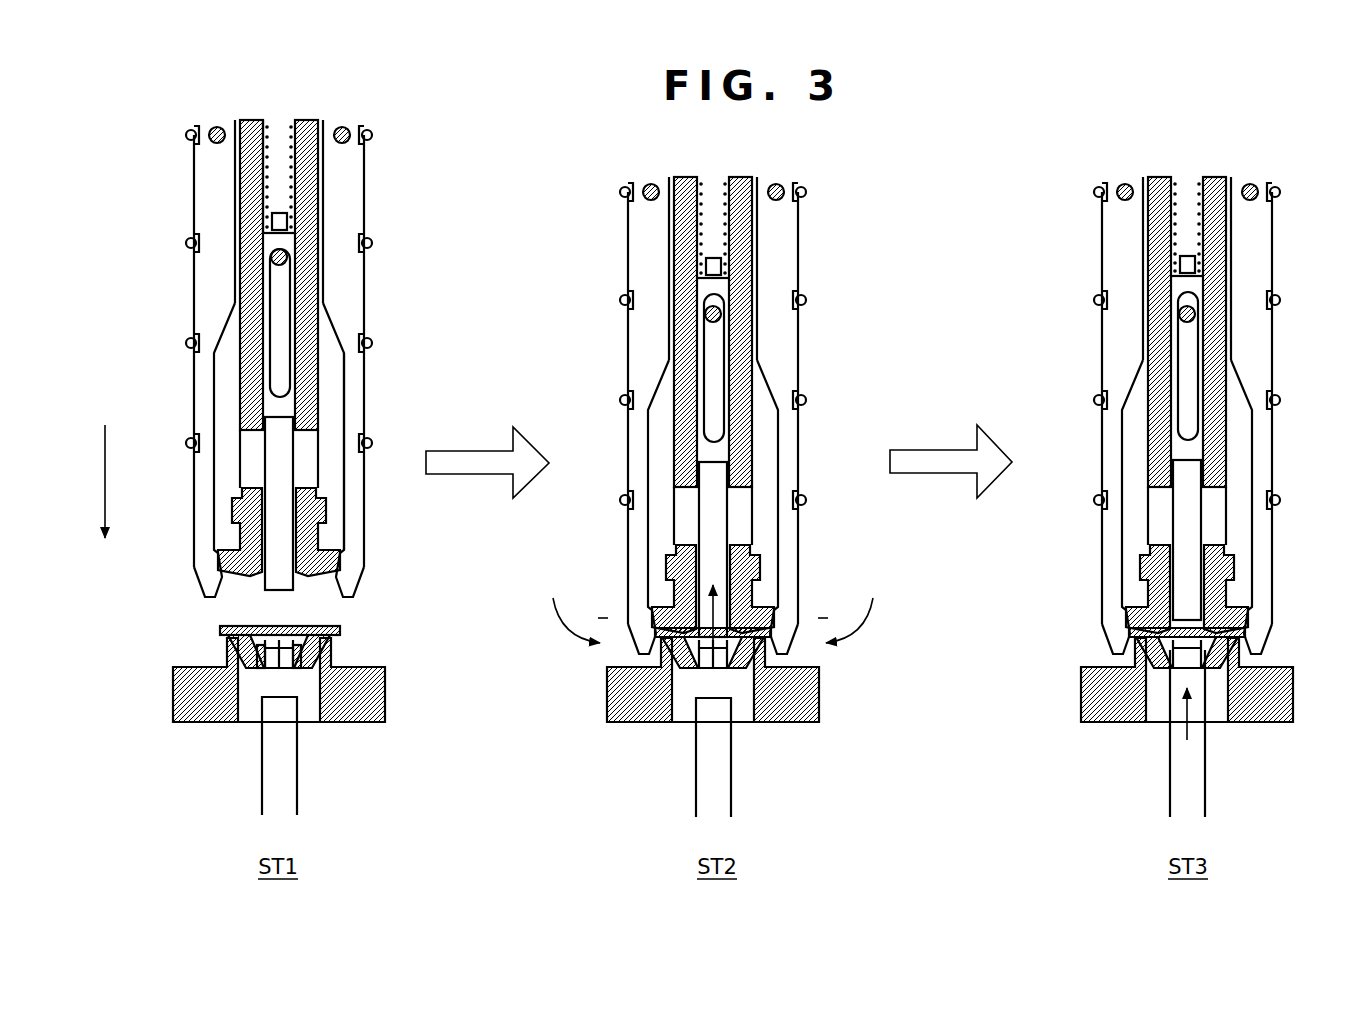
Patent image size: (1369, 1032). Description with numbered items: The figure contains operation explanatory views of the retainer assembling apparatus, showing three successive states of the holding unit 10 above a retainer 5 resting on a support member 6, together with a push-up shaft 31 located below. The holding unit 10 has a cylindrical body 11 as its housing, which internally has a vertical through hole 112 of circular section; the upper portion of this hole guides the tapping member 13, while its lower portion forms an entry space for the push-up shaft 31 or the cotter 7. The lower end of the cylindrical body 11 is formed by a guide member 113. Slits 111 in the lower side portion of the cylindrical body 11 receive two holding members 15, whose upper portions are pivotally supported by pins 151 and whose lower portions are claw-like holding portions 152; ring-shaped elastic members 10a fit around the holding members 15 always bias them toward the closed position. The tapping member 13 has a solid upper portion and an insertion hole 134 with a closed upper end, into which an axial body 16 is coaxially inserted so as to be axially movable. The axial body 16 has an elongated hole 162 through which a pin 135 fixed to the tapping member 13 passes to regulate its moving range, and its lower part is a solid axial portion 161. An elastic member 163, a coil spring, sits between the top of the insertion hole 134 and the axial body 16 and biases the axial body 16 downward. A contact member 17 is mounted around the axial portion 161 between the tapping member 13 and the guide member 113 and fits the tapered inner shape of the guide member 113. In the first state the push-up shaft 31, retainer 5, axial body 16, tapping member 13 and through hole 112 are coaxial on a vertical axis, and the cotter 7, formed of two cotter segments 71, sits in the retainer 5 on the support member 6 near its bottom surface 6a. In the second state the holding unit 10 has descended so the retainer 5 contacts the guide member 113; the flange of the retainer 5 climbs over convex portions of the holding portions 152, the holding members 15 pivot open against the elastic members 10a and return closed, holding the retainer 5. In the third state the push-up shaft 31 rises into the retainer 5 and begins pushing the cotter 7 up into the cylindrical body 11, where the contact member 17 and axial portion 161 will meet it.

The retainer 5 is at (338, 630).
The support member 6 is at (387, 693).
The bottom surface of cap holder 6a is at (312, 722).
The cotter 7 is at (262, 683).
The holding unit 10 is at (455, 183).
The elastic members 10a is at (372, 137).
The cylindrical body 11 is at (228, 392).
The tapping member 13 is at (250, 122).
The holding members 15 is at (194, 222).
The axial body 16 is at (262, 322).
The contact member 17 is at (320, 488).
The push-up shaft 31 is at (297, 778).
The cotter segments 71 is at (258, 653).
The slits 111 is at (332, 390).
The through hole 112 is at (252, 463).
The guide member 113 is at (325, 527).
The insertion hole 134 is at (282, 122).
The shaft (pin) 135 is at (271, 262).
The shafts (pins) 151 is at (211, 142).
The holding portions 152 is at (205, 593).
The axial portion 161 is at (279, 452).
The elongated hole 162 is at (291, 292).
The elastic member 163 is at (262, 170).